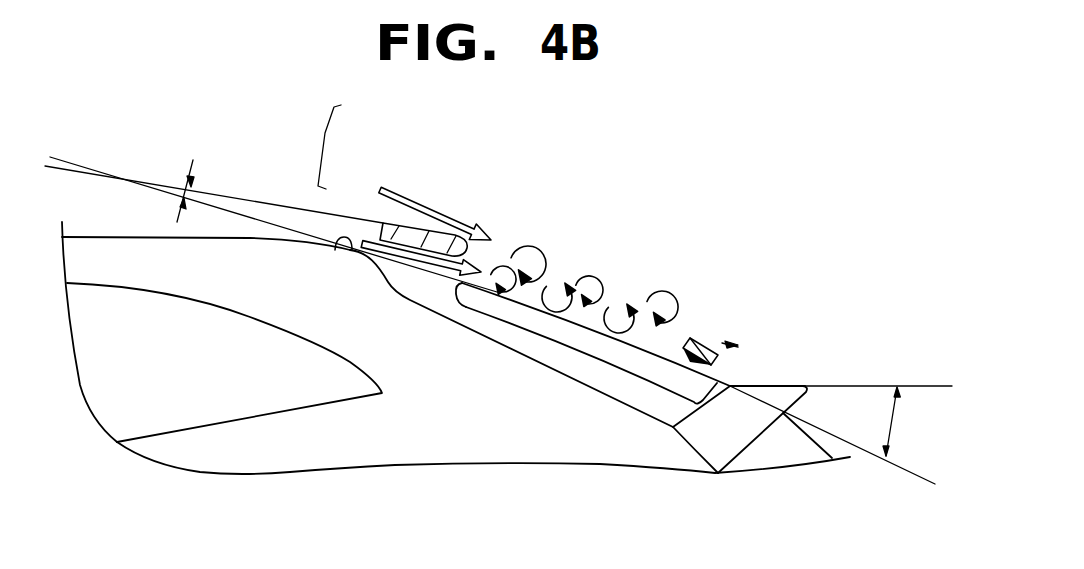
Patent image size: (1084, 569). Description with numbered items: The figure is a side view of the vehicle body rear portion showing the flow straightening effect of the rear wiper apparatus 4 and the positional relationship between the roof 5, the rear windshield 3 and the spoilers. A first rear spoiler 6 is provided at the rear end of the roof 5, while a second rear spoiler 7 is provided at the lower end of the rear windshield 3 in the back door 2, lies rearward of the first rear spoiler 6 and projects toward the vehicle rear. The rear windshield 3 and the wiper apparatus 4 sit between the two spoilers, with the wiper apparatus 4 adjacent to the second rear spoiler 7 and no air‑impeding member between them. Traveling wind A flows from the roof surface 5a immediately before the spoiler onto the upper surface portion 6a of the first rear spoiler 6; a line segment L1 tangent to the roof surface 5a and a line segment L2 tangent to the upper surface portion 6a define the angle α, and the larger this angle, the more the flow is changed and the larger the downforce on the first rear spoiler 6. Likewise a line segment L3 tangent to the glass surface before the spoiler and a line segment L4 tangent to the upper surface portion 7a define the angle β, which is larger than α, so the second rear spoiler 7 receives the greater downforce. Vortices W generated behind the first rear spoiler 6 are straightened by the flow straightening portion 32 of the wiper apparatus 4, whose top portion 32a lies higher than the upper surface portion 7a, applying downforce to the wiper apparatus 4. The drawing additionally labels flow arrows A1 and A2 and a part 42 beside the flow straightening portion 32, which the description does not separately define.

The back door 2 is at (515, 340).
The rear windshield 3 is at (570, 330).
The rear wiper apparatus 4 is at (738, 345).
The roof 5 is at (282, 242).
The roof surface immediately before the spoiler 5a is at (344, 245).
The first rear spoiler 6 is at (424, 246).
The upper surface portion of the first rear spoiler 6a is at (408, 226).
The second rear spoiler 7 is at (809, 389).
The upper surface portion of the second rear spoiler 7a is at (795, 385).
The flow straightening portion 32 is at (713, 341).
The fin 42 is at (690, 310).
The top portion of the flow straightening portion 32a is at (728, 341).
The traveling wind A is at (322, 143).
The first air flow A1 is at (362, 243).
The second air flow A2 is at (381, 189).
The vortices W is at (530, 246).
The line segment in contact with the roof surface immediately before the spoiler L1 is at (255, 224).
The line segment in contact with the upper surface portion of the first rear spoiler L2 is at (240, 195).
The line segment in contact with the glass surface immediately before the spoiler L3 is at (898, 466).
The line segment in contact with the upper surface portion of the second rear spoile L4 is at (937, 384).